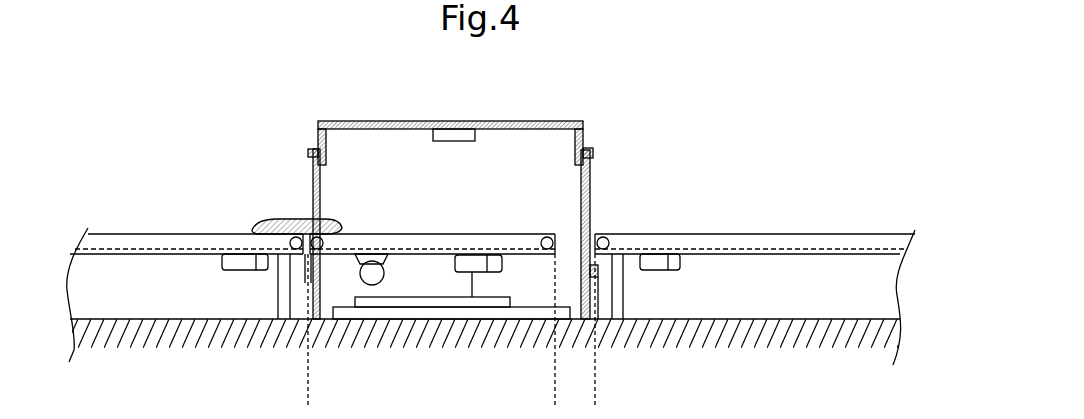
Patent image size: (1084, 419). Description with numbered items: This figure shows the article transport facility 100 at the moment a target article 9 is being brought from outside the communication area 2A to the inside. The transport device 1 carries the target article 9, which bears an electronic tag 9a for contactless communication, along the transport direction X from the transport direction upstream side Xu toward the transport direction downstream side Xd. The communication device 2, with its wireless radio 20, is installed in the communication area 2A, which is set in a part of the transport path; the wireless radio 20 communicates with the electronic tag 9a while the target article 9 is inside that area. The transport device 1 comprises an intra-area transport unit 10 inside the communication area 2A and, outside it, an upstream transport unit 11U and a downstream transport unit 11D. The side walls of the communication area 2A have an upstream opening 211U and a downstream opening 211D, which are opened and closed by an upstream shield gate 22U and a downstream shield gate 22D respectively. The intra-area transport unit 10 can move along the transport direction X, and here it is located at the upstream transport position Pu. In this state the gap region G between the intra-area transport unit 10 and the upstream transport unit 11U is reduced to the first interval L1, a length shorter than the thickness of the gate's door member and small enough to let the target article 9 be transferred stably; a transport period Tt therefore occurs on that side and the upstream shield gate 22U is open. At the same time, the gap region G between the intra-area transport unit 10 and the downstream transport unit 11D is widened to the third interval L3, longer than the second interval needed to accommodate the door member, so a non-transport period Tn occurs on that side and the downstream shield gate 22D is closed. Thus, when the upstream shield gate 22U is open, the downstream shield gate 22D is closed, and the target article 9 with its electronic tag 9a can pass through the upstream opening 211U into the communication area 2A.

The article transport facility 100 is at (490, 205).
The transport device 1 is at (490, 220).
The upstream transport unit 11U is at (118, 197).
The downstream transport unit 11D is at (828, 207).
The intra-area transport unit 10 is at (522, 183).
The communication device 2 is at (435, 109).
The communication area 2A is at (378, 142).
The wireless radio 20 is at (452, 142).
The upstream shield gate 22U is at (300, 152).
The downstream shield gate 22D is at (603, 143).
The upstream opening 211U is at (302, 193).
The downstream opening 211D is at (598, 197).
The target article 9 is at (271, 196).
The electronic tag 9a is at (273, 216).
The upstream transport position Pu is at (403, 228).
The transport period Tt is at (263, 166).
The non-transport period Tn is at (658, 167).
The gap region G is at (328, 262).
The first interval L1 is at (332, 395).
The third interval L3 is at (593, 393).
The transport direction X is at (838, 388).
The transport direction upstream side Xu is at (709, 390).
The transport direction downstream side Xd is at (860, 390).